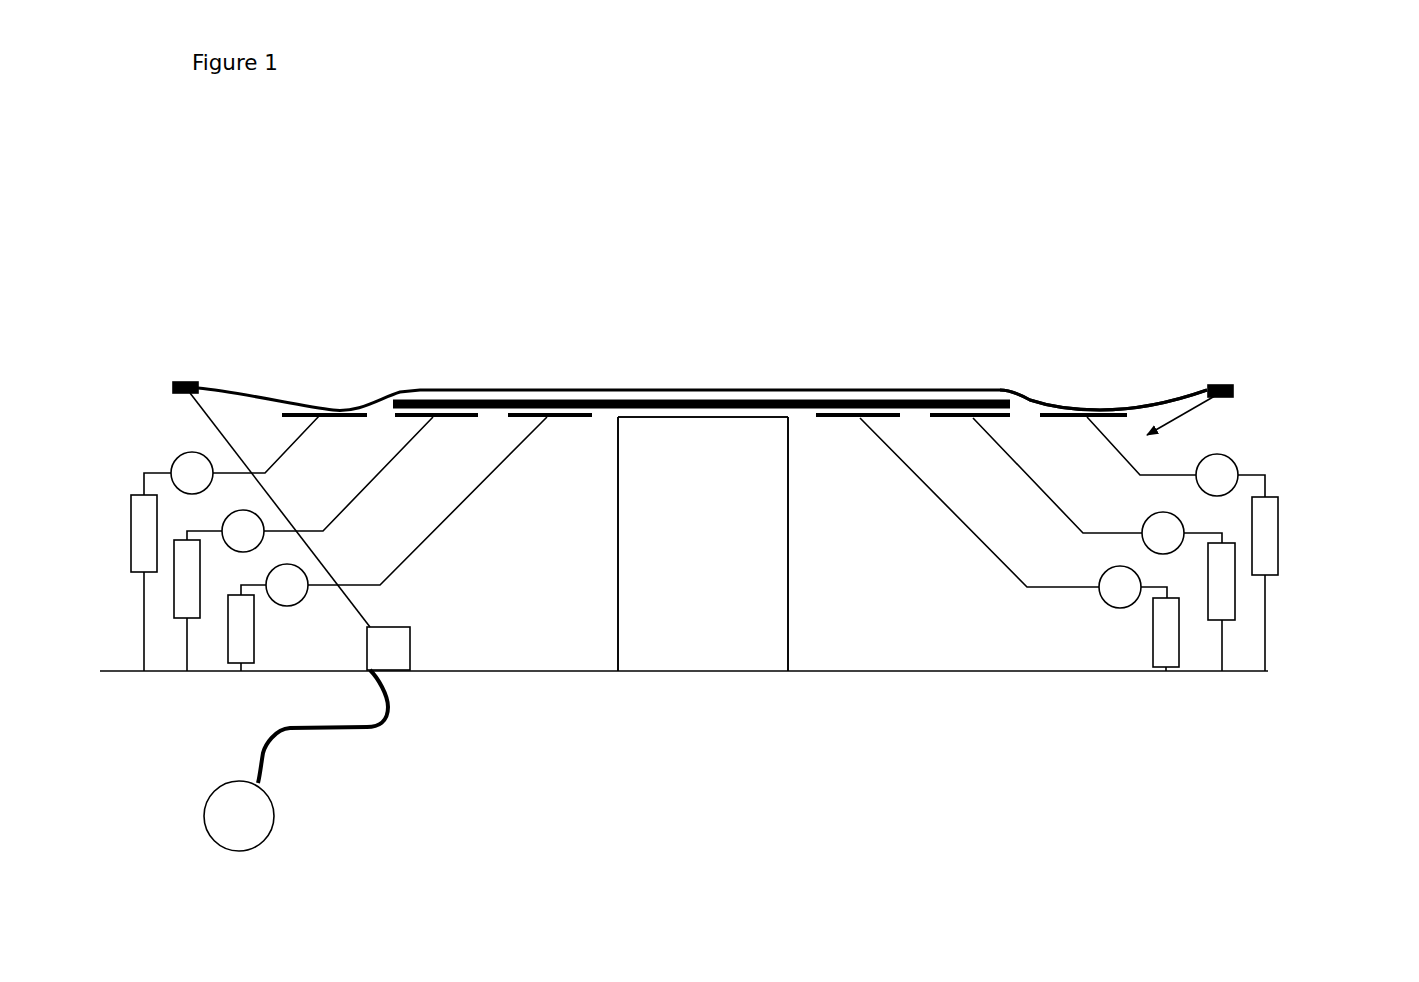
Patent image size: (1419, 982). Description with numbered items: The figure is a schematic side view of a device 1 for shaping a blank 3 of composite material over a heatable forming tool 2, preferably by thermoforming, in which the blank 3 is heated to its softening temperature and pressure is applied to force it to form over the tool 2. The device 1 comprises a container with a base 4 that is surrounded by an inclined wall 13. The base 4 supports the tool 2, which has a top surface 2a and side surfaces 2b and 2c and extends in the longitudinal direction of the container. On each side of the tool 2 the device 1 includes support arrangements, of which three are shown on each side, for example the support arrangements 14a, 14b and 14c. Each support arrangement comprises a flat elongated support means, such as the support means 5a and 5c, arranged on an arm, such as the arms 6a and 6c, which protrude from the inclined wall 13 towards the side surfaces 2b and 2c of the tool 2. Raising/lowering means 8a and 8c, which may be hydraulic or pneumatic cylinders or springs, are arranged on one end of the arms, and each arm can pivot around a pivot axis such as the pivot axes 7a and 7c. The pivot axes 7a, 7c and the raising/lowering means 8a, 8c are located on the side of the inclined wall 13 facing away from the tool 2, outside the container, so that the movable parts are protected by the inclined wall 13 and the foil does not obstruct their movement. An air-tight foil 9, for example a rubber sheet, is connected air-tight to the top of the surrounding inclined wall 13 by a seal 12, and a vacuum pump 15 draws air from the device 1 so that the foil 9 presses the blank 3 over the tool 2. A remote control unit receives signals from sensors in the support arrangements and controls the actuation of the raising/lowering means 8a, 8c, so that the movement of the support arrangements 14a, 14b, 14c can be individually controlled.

The device 1 is at (430, 633).
The forming tool 2 is at (687, 633).
The top surface 2a is at (733, 415).
The side surface 2b is at (797, 595).
The side surface 2c is at (608, 538).
The blank 3 is at (667, 402).
The base 4 is at (529, 692).
The support means 5a is at (857, 433).
The support means 5c is at (1098, 393).
The arm 6a is at (913, 505).
The arm 6c is at (1003, 671).
The pivot axis 7a is at (1095, 606).
The pivot axis 7c is at (1248, 442).
The raising/lowering means 8a is at (1143, 637).
The raising/lowering means 8c is at (1295, 521).
The air-tight foil 9 is at (247, 383).
The seal 12 is at (168, 363).
The inclined wall 13 is at (320, 598).
The support arrangement 14a is at (1190, 660).
The support arrangement 14b is at (1240, 648).
The support arrangement 14c is at (1295, 599).
The vacuum pump 15 is at (315, 837).